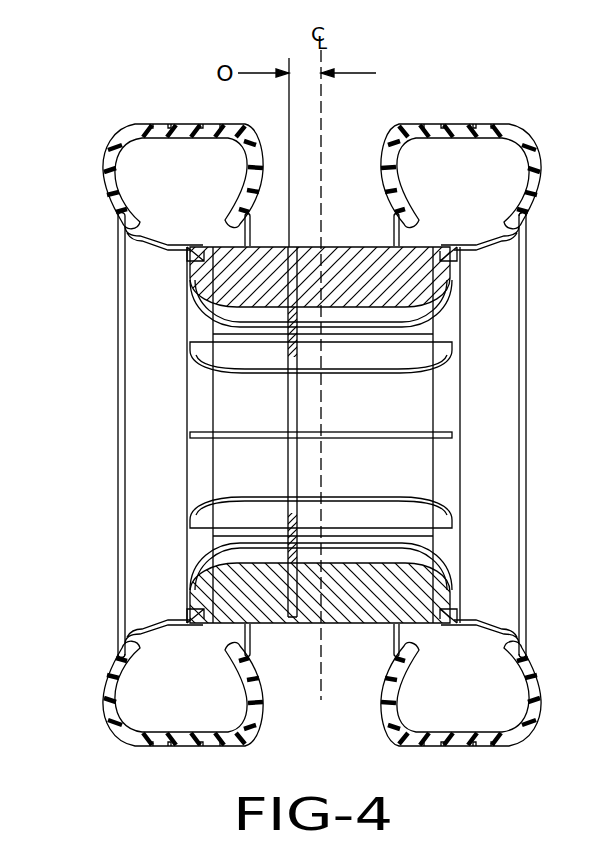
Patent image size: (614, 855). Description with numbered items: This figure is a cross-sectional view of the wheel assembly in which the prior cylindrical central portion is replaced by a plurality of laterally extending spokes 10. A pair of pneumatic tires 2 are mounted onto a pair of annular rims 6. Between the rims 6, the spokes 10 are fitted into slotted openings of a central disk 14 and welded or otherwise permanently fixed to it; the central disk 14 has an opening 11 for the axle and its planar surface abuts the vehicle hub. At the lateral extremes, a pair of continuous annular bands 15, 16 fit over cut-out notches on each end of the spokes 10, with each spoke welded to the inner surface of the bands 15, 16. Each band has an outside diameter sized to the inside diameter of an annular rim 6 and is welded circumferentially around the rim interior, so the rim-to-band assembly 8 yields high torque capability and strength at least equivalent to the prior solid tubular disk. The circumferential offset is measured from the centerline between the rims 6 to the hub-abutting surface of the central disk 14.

The pneumatic tire 2 is at (108, 712).
The annular rim 6 is at (147, 543).
The assembly 8 is at (160, 237).
The spoke 10 is at (423, 354).
The opening 11 is at (290, 453).
The central disk 14 is at (290, 332).
The continuous annular band 15 is at (440, 253).
The continuous annular band 16 is at (200, 253).